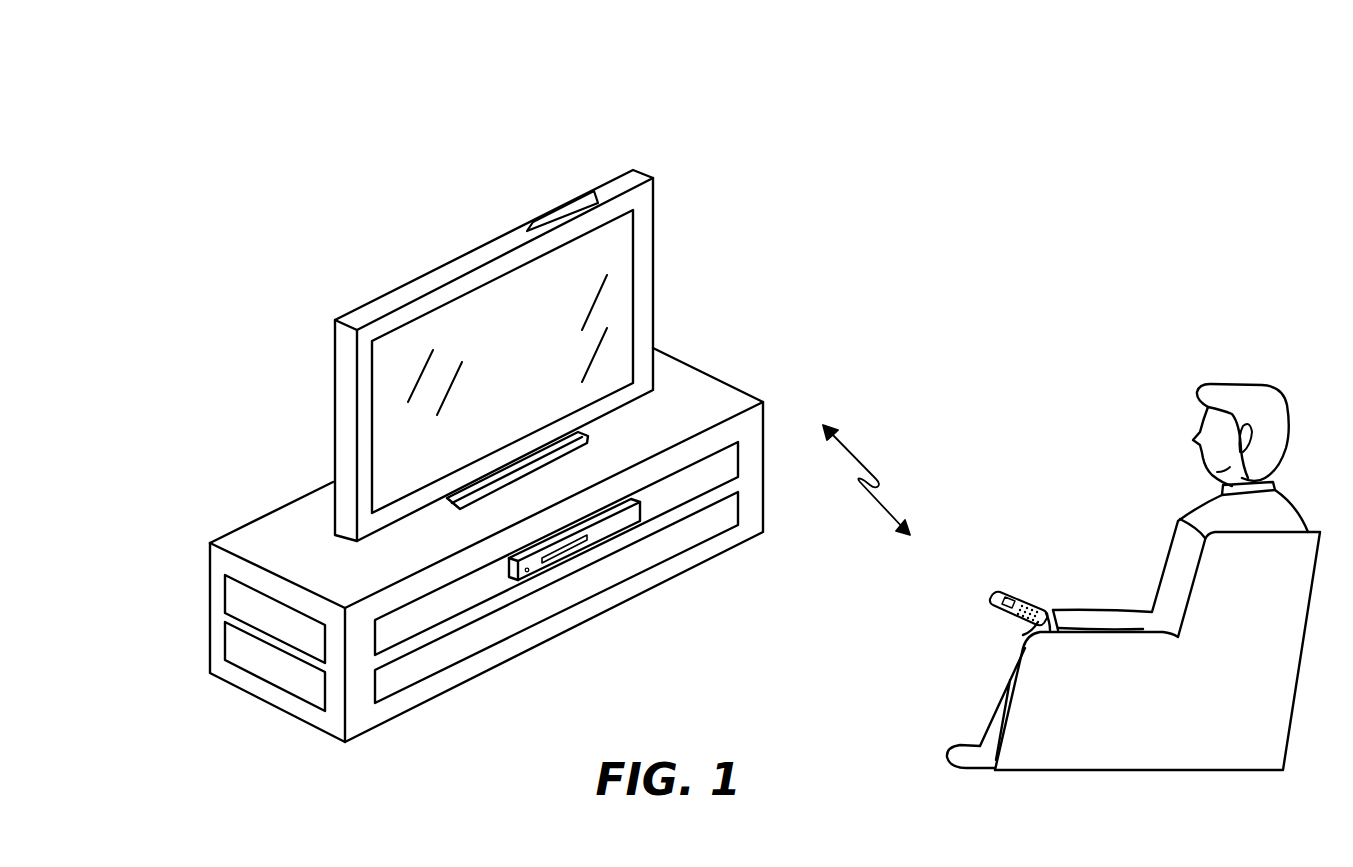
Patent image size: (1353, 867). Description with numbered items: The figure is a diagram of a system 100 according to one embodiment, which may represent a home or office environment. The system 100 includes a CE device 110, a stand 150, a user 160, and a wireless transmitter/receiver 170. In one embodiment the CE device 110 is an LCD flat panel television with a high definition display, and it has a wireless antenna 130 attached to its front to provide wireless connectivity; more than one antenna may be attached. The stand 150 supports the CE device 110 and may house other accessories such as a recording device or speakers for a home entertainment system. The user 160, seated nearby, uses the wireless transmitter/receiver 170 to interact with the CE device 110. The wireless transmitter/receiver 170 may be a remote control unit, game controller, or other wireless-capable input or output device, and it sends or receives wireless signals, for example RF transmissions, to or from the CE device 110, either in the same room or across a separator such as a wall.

The system 100 is at (1098, 140).
The CE device 110 is at (581, 108).
The wireless antenna 130 is at (589, 202).
The stand 150 is at (293, 527).
The user 160 is at (1152, 575).
The wireless transmitter/receiver 170 is at (992, 603).